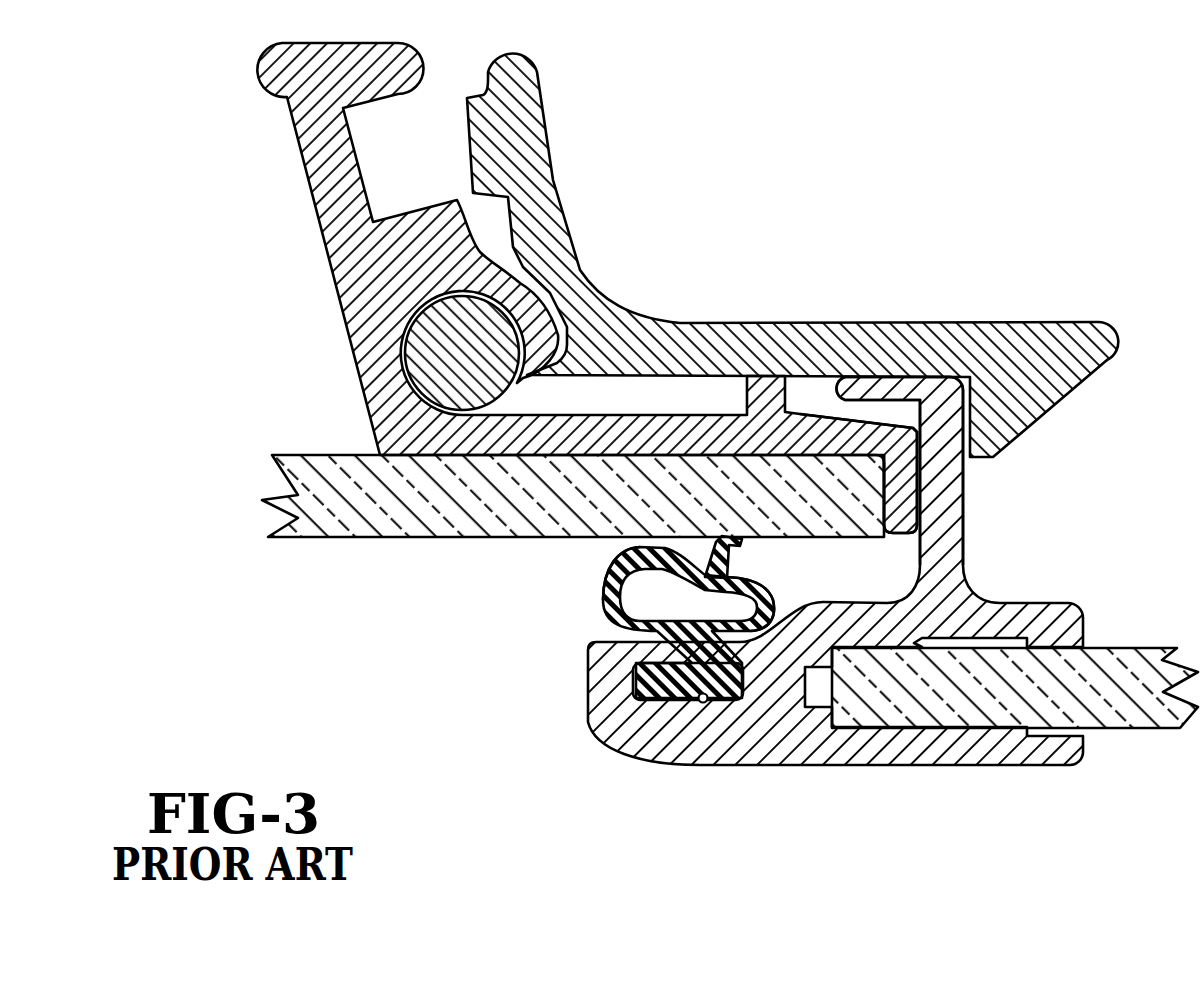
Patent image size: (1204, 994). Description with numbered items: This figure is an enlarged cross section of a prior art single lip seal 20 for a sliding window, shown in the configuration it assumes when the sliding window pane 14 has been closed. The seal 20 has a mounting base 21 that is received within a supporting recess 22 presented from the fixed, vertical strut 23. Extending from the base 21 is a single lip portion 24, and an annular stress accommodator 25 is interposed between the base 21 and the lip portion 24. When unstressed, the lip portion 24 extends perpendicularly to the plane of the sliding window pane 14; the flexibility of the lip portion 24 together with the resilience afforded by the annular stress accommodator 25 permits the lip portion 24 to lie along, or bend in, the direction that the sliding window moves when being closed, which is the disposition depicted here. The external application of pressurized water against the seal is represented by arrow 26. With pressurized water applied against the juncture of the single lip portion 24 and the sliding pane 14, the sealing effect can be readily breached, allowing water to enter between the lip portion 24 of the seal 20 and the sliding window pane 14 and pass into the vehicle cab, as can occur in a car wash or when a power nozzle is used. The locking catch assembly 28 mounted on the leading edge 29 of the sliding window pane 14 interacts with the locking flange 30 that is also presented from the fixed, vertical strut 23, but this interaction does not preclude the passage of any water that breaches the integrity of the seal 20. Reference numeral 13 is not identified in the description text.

The glass pane 13 is at (1138, 662).
The sliding window pane 14 is at (338, 492).
The single lip seal 20 is at (588, 622).
The mounting base 21 is at (660, 683).
The supporting recess 22 is at (703, 704).
The fixed vertical strut 23 is at (913, 768).
The lip portion 24 is at (742, 542).
The annular stress accommodator 25 is at (770, 603).
The arrow 26 is at (583, 549).
The locking catch assembly 28 is at (648, 298).
The leading edge 29 is at (887, 502).
The locking flange 30 is at (958, 490).